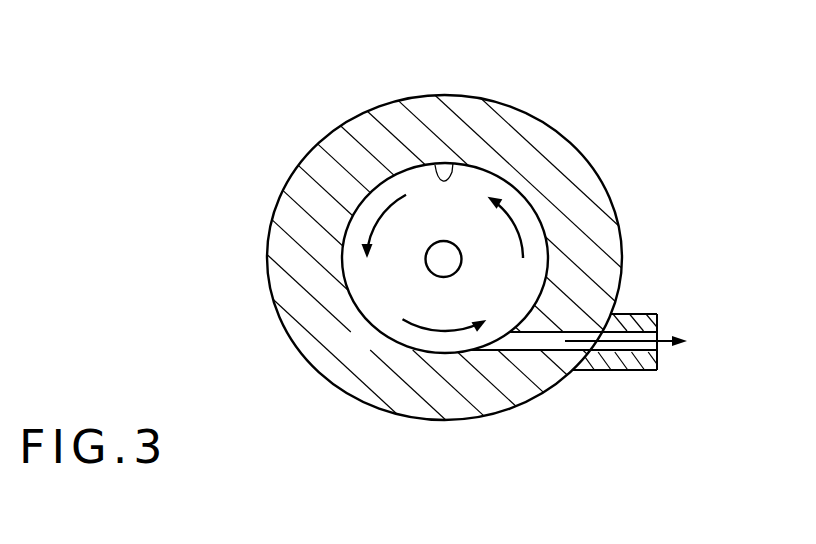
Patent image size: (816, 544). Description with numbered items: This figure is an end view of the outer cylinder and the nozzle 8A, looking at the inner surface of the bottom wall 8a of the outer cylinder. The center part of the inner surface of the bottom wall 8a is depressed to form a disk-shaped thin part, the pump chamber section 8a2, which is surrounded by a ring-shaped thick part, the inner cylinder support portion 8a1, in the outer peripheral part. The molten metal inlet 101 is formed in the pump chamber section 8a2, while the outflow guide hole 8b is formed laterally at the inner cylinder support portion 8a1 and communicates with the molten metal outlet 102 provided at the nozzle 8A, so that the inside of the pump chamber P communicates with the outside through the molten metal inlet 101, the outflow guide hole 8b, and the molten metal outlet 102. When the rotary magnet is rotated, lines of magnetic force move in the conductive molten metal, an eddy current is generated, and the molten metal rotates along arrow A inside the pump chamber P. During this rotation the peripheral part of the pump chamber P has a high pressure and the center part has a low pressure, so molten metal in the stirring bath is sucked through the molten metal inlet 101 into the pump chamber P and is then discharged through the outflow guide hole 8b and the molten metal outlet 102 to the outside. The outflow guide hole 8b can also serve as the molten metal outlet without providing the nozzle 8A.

The bottom wall 8a is at (622, 93).
The inner cylinder support portion 8a1 is at (583, 177).
The pump chamber section 8a2 is at (377, 292).
The outflow guide hole 8b is at (518, 350).
The nozzle 8A is at (638, 314).
The molten metal inlet 101 is at (448, 252).
The molten metal outlet 102 is at (658, 348).
The pump chamber P is at (435, 165).
The arrow A is at (380, 220).